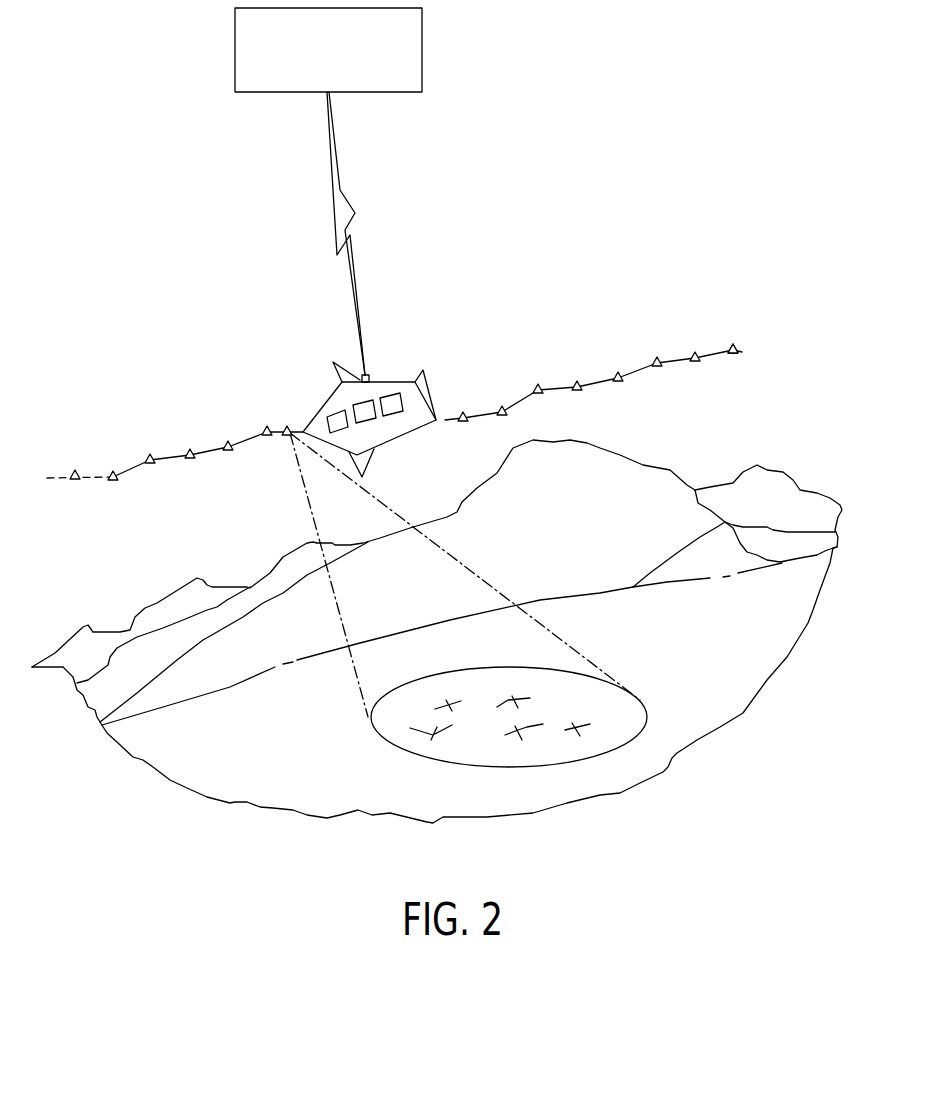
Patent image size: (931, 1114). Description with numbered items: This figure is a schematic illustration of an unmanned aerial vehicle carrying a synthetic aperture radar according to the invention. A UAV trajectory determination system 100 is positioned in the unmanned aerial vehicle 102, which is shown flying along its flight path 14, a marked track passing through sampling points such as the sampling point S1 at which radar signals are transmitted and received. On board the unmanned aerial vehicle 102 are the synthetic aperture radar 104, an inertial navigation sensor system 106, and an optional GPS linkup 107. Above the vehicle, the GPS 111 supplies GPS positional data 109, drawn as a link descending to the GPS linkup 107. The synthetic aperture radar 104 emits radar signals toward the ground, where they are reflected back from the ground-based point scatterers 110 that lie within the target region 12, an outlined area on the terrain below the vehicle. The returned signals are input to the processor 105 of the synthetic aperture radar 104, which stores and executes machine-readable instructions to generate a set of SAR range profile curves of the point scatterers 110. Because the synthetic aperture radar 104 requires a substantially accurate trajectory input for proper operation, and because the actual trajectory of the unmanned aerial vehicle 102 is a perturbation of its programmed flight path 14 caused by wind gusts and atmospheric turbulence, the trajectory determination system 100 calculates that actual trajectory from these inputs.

The UAV trajectory determination system 100 is at (608, 170).
The unmanned aerial vehicle 102 is at (370, 465).
The synthetic aperture radar 104 is at (370, 422).
The processor 105 is at (381, 400).
The inertial navigation sensor system 106 is at (337, 411).
The GPS linkup 107 is at (372, 372).
The GPS positional data 109 is at (342, 188).
The GPS 111 is at (423, 52).
The ground-based point scatterers 110 is at (442, 702).
The target region 12 is at (652, 680).
The flight path 14 is at (175, 455).
The sampling point S1 is at (732, 343).